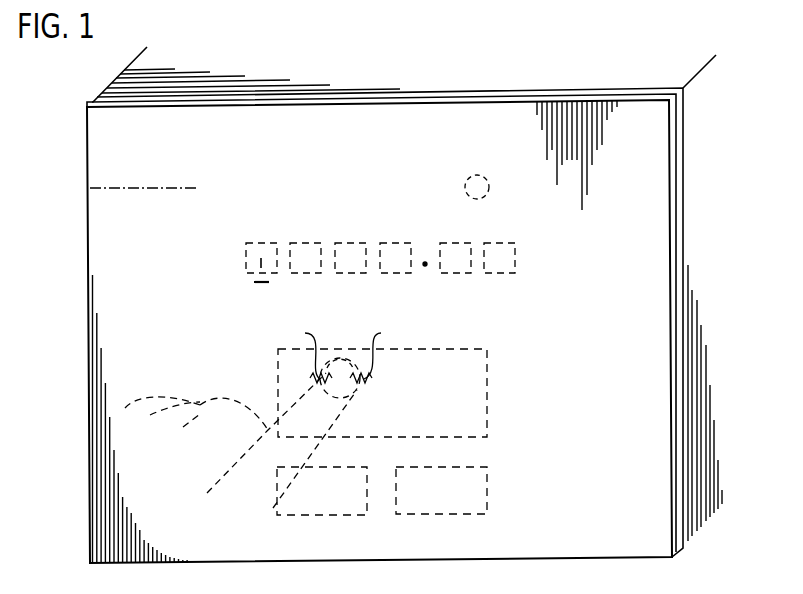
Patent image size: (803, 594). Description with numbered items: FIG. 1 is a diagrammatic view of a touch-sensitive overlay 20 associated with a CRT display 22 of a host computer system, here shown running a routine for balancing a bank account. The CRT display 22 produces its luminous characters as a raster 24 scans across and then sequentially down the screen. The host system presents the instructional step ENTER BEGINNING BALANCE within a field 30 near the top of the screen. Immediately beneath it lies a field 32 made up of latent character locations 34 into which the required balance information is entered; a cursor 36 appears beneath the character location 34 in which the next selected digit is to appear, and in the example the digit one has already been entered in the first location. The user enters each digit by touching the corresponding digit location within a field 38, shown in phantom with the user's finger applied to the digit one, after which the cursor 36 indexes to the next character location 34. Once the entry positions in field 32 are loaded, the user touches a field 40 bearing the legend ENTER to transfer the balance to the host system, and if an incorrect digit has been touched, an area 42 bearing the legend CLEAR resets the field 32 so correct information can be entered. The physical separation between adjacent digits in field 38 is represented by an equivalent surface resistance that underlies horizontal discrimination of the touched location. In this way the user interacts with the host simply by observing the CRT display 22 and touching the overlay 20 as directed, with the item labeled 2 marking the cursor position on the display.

The cursor 2 is at (486, 181).
The touch-sensitive overlay 20 is at (650, 432).
The CRT display 22 is at (708, 81).
The raster 24 is at (160, 193).
The field 30 is at (490, 187).
The field 32 is at (416, 236).
The latent character locations 34 is at (305, 243).
The cursor 36 is at (261, 284).
The field 38 is at (489, 393).
The field 40 is at (317, 509).
The area 42 is at (442, 508).